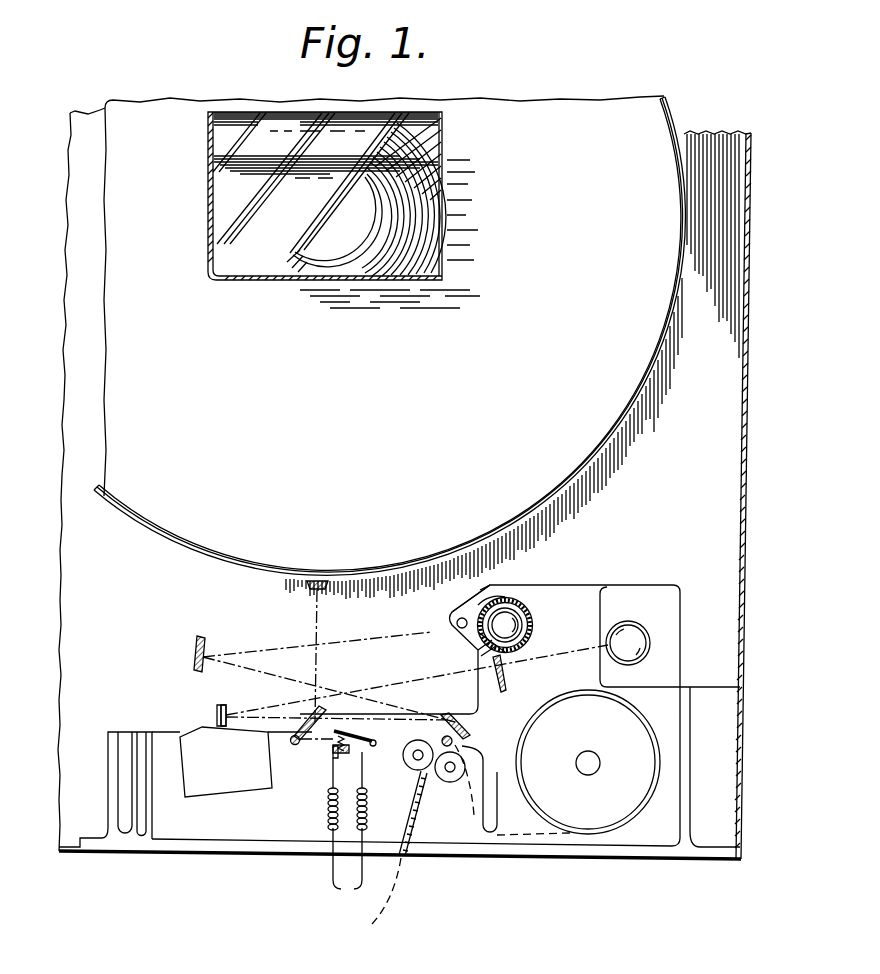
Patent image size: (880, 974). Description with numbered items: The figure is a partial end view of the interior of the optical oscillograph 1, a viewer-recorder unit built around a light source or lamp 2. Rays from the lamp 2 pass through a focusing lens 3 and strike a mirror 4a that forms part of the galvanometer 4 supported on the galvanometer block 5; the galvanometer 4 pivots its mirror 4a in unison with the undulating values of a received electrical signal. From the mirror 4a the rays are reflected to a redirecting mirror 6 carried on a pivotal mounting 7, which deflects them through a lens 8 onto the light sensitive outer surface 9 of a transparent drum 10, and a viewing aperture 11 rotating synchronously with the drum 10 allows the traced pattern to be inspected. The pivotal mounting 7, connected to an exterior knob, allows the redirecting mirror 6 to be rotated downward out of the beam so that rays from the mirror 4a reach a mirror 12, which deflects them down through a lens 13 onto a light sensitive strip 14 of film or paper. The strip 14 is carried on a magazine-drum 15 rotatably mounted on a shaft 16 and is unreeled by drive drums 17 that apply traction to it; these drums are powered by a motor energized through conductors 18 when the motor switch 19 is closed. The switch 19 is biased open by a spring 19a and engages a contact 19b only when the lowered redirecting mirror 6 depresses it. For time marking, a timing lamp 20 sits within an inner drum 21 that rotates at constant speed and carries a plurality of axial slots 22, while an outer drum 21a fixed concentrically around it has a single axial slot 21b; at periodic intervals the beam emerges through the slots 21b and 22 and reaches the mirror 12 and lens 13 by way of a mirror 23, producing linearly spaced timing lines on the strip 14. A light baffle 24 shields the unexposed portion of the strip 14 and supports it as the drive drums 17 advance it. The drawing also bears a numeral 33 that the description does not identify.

The optical oscillograph 1 is at (750, 452).
The light source or lamp 2 is at (636, 626).
The focusing lens 3 is at (506, 674).
The galvanometer 4 is at (217, 714).
The mirror 4a is at (226, 710).
The galvanometer block 5 is at (181, 770).
The redirecting mirror 6 is at (301, 726).
The pivotal mounting 7 is at (296, 746).
The lens 8 is at (326, 589).
The light sensitive outer surface 9 is at (484, 438).
The transparent drum 10 is at (614, 417).
The viewing aperture 11 is at (356, 242).
The mirror 12 is at (468, 728).
The lens 13 is at (442, 740).
The light sensitive strip 14 is at (464, 806).
The magazine-drum 15 is at (546, 815).
The shaft 16 is at (589, 751).
The drive drums 17 is at (420, 774).
The conductors 18 is at (347, 832).
The motor switch 19 is at (360, 736).
The spring 19a is at (352, 752).
The contact 19b is at (333, 753).
The timing lamp 20 is at (530, 626).
The inner drum 21 is at (526, 610).
The outer drum 21a is at (500, 598).
The axial slot 21b is at (470, 636).
The axial slots 22 is at (484, 652).
The mirror 23 is at (206, 646).
The light baffle 24 is at (497, 812).
The window 33 is at (251, 260).